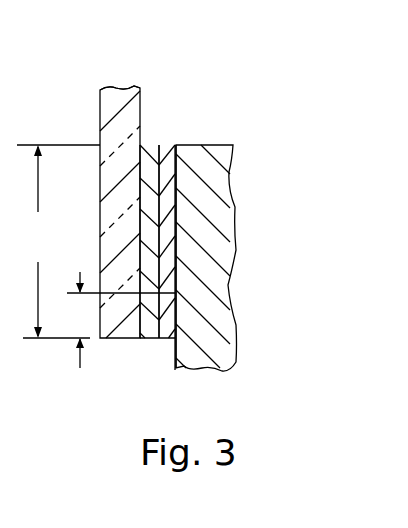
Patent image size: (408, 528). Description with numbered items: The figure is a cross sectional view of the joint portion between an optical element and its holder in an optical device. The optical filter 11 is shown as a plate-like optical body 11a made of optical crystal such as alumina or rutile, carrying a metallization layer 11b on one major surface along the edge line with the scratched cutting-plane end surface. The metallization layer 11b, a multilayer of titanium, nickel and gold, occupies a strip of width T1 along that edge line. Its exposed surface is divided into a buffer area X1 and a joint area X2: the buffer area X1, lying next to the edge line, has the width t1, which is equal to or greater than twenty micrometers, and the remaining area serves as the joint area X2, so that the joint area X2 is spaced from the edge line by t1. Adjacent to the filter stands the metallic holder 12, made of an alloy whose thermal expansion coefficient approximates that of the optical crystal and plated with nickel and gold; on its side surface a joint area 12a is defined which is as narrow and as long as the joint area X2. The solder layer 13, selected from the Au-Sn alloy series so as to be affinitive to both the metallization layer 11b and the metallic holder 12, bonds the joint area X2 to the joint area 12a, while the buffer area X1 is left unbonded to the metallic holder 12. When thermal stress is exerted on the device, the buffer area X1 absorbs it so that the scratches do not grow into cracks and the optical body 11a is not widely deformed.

The optical filter 11 is at (96, 97).
The optical body 11a is at (115, 88).
The metallization layer 11b is at (150, 145).
The metallic holder 12 is at (210, 138).
The joint area 12a is at (178, 218).
The solder layer 13 is at (168, 145).
The buffer area X1 is at (154, 317).
The joint area X2 is at (140, 217).
The width of metallization layer T1 is at (39, 241).
The width of buffer area t1 is at (81, 320).